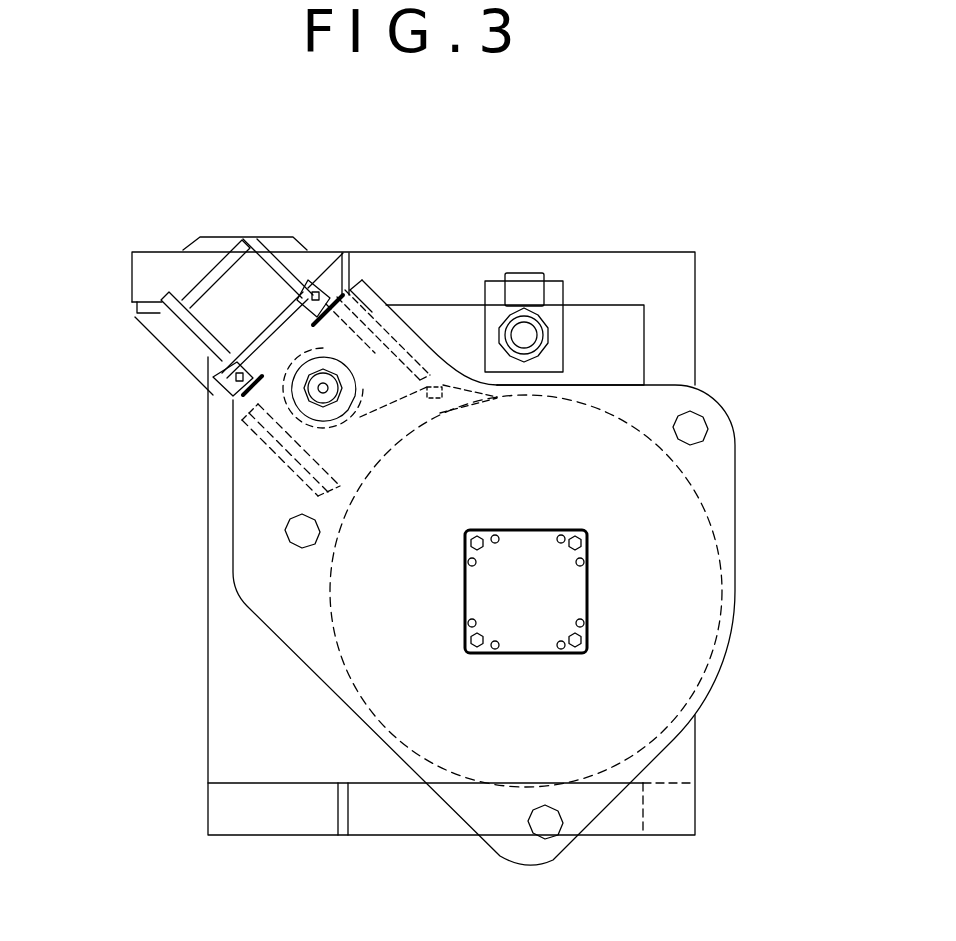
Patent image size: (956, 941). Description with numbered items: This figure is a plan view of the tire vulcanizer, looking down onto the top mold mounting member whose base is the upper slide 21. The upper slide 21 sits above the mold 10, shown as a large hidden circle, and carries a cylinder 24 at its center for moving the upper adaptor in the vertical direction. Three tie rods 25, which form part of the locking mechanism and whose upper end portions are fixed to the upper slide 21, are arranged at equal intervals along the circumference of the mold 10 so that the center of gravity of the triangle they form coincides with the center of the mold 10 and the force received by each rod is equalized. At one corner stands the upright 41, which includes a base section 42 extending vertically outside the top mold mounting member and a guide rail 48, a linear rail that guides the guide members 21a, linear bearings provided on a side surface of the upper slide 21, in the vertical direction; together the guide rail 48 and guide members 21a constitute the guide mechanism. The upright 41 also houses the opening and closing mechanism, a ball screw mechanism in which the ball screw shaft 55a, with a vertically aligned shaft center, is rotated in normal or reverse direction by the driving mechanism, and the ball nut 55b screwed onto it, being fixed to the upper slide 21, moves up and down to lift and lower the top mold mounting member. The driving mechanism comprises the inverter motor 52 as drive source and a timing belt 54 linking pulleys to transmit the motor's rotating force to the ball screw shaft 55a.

The mold 10 is at (728, 576).
The upper slide 21 is at (715, 483).
The guide members 21a is at (325, 292).
The cylinder 24 is at (588, 592).
The tie rods 25 is at (300, 532).
The upright 41 is at (222, 246).
The base section 42 is at (165, 310).
The guide rail 48 is at (214, 373).
The inverter motor 52 is at (563, 333).
The timing belt 54 is at (332, 347).
The ball screw shaft 55a is at (323, 388).
The ball nut 55b is at (300, 382).